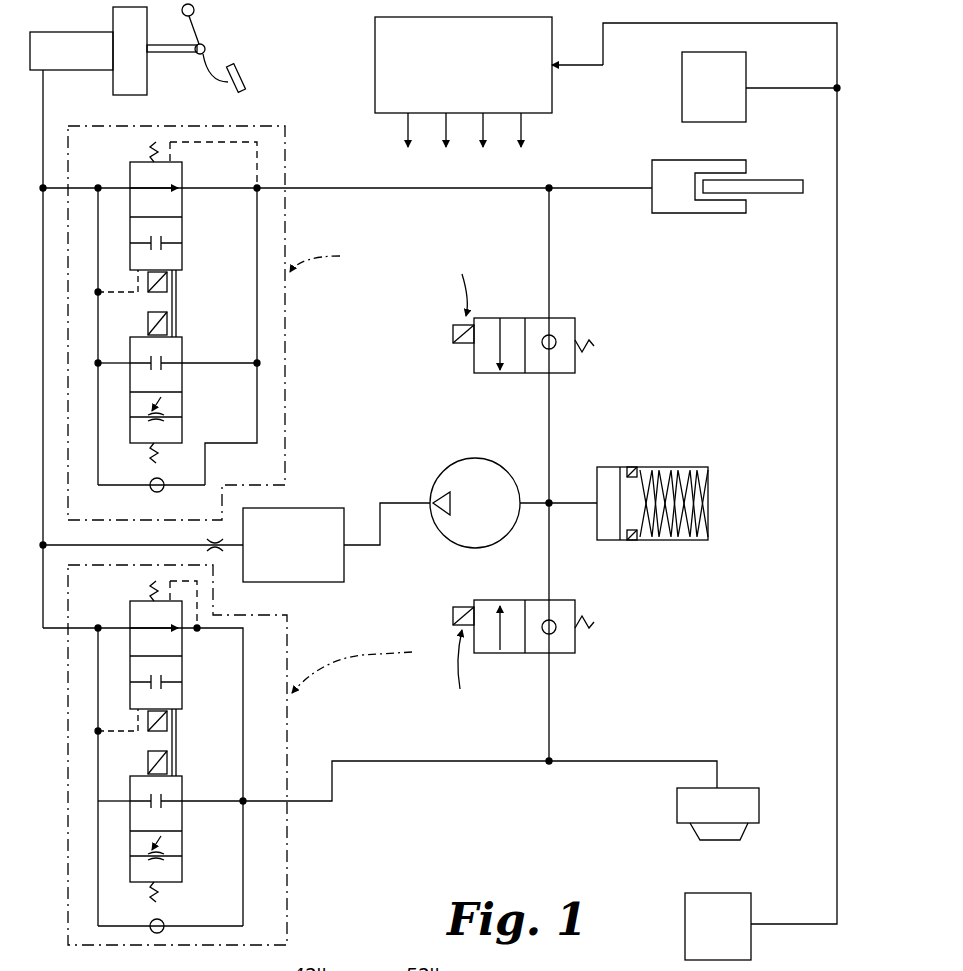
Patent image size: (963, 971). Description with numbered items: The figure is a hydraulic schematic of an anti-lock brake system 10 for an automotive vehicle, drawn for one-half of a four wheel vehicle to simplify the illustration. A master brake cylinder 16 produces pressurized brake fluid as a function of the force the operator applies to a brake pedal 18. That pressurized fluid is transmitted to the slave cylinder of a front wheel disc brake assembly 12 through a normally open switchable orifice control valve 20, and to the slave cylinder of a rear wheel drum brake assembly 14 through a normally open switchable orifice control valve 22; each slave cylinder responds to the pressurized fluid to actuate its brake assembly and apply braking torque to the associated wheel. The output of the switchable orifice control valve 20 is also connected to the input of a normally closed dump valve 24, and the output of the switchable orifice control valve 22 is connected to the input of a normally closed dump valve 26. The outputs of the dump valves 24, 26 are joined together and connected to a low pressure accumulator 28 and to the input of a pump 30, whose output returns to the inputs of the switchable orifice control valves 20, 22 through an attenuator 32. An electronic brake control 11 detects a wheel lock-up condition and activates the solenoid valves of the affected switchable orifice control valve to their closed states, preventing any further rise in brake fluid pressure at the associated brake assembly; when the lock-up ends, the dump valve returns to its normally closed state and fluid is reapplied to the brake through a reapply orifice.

The anti-lock brake system 10 is at (462, 770).
The electronic brake control 11 is at (375, 42).
The front wheel disc brake assembly 12 is at (662, 160).
The rear wheel drum brake assembly 14 is at (677, 800).
The master brake cylinder 16 is at (78, 32).
The brake pedal 18 is at (247, 80).
The switchable orifice control valve 20 is at (185, 305).
The switchable orifice control valve 22 is at (233, 755).
The dump valve 24 is at (590, 347).
The dump valve 26 is at (575, 650).
The low pressure accumulator 28 is at (710, 470).
The pump 30 is at (475, 458).
The attenuator 32 is at (318, 508).